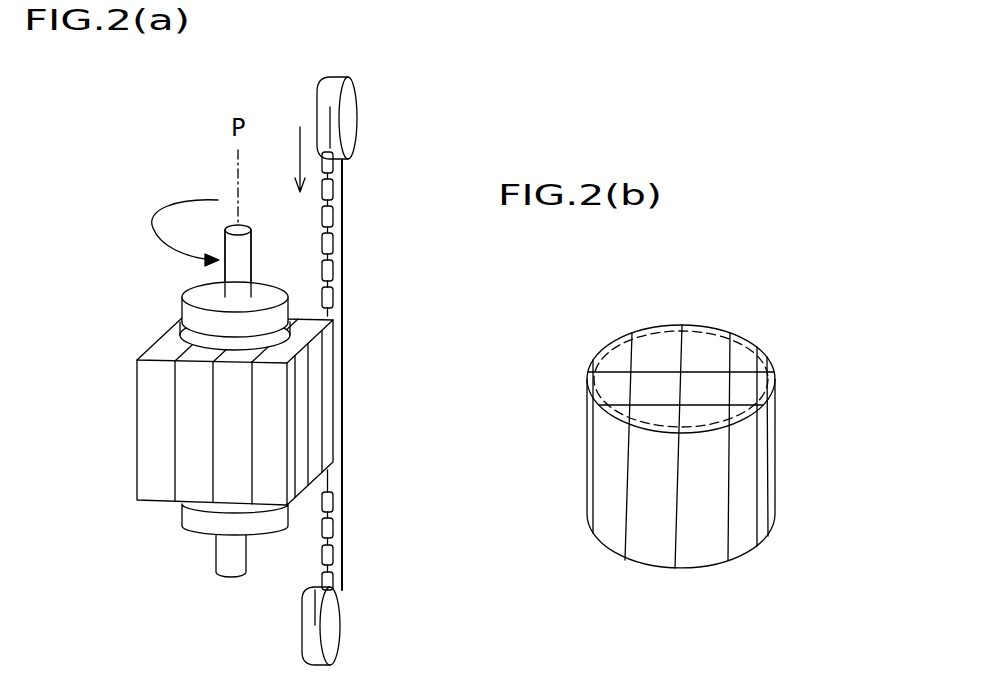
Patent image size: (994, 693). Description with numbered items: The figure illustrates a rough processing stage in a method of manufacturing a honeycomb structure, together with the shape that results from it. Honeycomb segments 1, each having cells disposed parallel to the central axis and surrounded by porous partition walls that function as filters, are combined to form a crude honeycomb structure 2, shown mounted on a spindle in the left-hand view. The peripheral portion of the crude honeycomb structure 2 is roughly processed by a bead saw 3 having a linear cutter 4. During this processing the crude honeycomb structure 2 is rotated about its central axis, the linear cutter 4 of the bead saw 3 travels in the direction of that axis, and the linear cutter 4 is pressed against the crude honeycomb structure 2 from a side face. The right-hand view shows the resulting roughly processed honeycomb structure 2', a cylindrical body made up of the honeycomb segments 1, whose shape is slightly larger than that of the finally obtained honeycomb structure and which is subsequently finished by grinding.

In FIG. 2A, the honeycomb segment 1 is at (137, 382).
In FIG. 2B, the honeycomb segment 1 is at (656, 362).
In FIG. 2A, the crude honeycomb structure 2 is at (191, 415).
In FIG. 2B, the roughly processed honeycomb structure 2' is at (635, 446).
In FIG. 2A, the bead saw 3 is at (368, 185).
In FIG. 2A, the linear cutter 4 is at (327, 243).